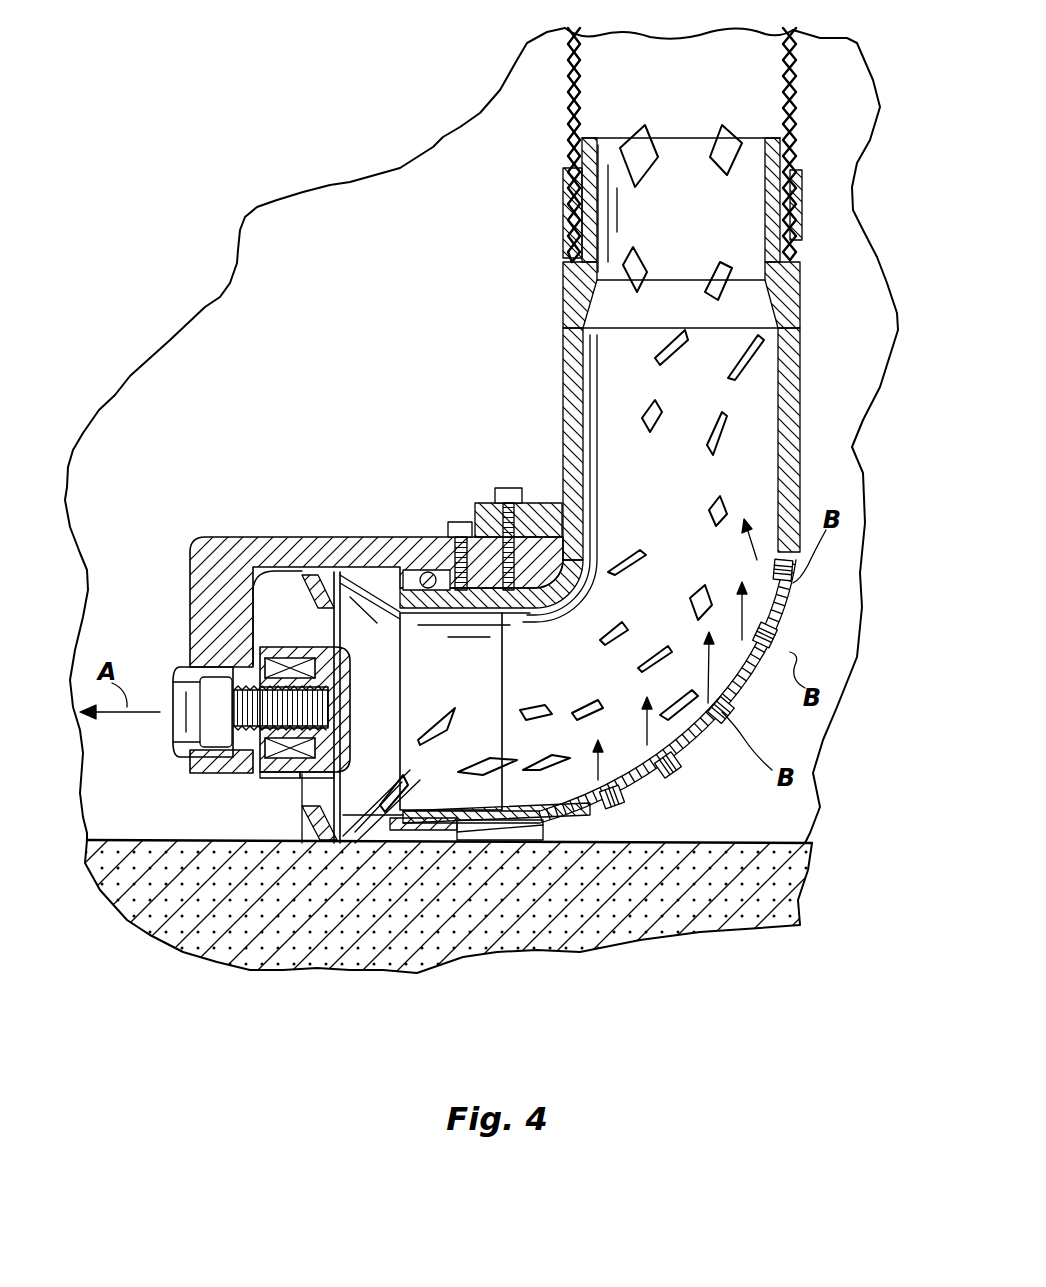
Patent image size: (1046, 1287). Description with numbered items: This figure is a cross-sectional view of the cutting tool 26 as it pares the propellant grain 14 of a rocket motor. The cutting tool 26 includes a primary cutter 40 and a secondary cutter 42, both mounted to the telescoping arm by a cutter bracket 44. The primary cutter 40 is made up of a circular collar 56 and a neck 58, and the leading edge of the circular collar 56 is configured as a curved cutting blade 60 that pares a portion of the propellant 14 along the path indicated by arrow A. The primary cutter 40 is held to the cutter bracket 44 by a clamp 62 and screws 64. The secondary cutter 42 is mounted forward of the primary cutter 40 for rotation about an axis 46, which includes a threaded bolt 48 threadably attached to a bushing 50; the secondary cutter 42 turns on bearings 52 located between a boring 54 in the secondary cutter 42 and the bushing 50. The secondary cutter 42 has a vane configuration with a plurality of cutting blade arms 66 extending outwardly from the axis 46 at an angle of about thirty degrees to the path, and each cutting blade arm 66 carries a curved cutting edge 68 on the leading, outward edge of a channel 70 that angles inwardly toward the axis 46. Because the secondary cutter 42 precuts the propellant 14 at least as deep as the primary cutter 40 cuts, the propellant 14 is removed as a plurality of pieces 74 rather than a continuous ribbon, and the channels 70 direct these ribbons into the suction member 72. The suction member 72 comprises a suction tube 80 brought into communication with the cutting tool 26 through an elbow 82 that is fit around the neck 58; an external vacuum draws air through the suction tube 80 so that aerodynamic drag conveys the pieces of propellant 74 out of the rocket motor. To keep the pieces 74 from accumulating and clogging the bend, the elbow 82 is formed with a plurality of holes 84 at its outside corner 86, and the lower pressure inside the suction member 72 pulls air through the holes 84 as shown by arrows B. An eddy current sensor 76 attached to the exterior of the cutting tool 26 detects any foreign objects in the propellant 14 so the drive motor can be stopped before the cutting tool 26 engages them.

The propellant grain 14 is at (655, 920).
The cutting tool 26 is at (190, 530).
The primary cutter 40 is at (403, 845).
The secondary cutter 42 is at (323, 845).
The cutter bracket 44 is at (253, 535).
The axis 46 is at (182, 677).
The threaded bolt 48 is at (180, 742).
The bushing 50 is at (333, 715).
The bearings 52 is at (305, 778).
The boring 54 is at (273, 778).
The circular collar 56 is at (400, 845).
The neck 58 is at (478, 832).
The curved cutting blade 60 is at (363, 845).
The clamp 62 is at (460, 520).
The screws 64 is at (508, 488).
The cutting blade arms 66 is at (170, 947).
The curved cutting edge 68 is at (297, 845).
The channel 70 is at (300, 585).
The suction member 72 is at (818, 291).
The pieces of propellant 74 is at (718, 145).
The eddy current sensor 76 is at (545, 825).
The suction tube 80 is at (795, 97).
The elbow 82 is at (805, 462).
The holes 84 is at (790, 575).
The outside corner 86 is at (752, 725).